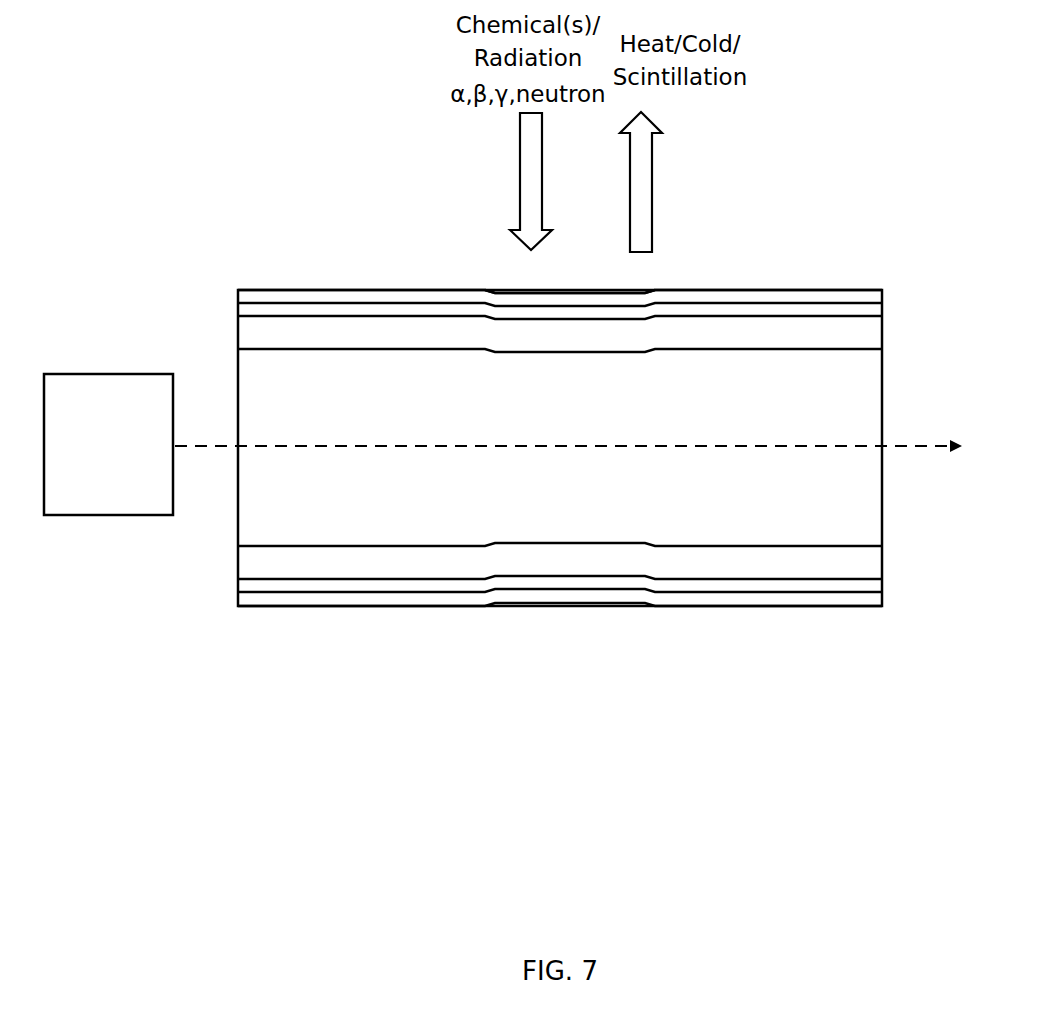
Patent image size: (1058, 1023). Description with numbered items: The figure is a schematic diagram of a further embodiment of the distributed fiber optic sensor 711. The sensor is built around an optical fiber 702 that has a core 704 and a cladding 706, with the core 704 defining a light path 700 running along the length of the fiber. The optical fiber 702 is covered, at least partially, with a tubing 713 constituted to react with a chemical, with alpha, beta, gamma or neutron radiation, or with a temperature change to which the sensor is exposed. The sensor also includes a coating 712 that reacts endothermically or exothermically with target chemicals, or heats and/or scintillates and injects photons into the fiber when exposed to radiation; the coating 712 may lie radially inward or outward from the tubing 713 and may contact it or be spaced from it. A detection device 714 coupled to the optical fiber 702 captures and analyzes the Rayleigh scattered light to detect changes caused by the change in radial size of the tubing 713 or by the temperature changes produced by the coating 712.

The light path 700 is at (213, 412).
The optical fiber 702 is at (395, 268).
The core 704 is at (287, 395).
The cladding 706 is at (338, 337).
The distributed fiber optic sensor 711 is at (500, 288).
The coating 712 is at (790, 290).
The tubing 713 is at (843, 312).
The detection device 714 is at (108, 444).